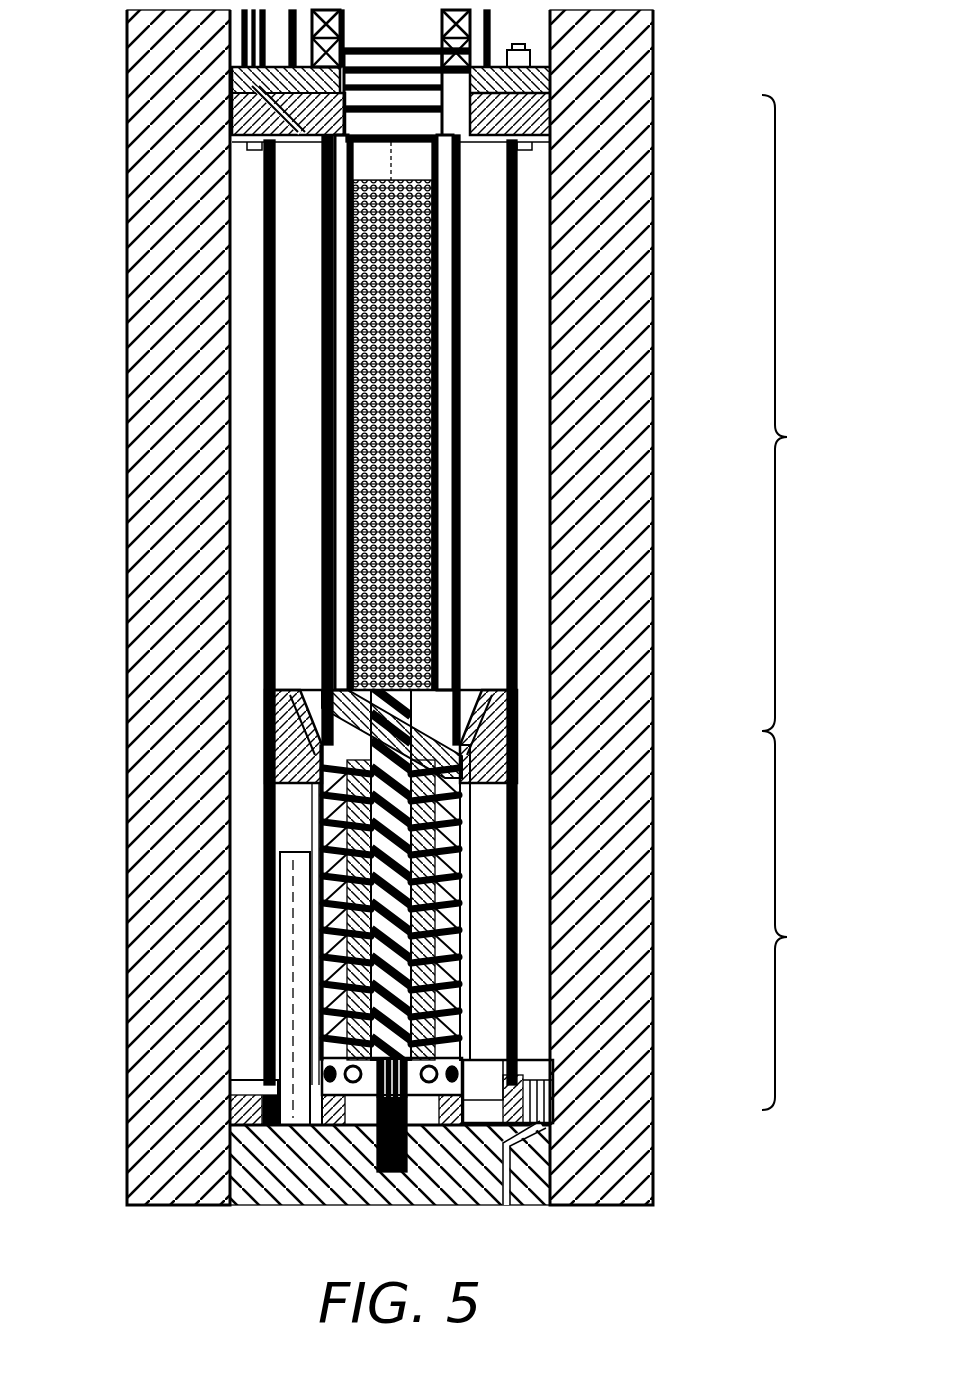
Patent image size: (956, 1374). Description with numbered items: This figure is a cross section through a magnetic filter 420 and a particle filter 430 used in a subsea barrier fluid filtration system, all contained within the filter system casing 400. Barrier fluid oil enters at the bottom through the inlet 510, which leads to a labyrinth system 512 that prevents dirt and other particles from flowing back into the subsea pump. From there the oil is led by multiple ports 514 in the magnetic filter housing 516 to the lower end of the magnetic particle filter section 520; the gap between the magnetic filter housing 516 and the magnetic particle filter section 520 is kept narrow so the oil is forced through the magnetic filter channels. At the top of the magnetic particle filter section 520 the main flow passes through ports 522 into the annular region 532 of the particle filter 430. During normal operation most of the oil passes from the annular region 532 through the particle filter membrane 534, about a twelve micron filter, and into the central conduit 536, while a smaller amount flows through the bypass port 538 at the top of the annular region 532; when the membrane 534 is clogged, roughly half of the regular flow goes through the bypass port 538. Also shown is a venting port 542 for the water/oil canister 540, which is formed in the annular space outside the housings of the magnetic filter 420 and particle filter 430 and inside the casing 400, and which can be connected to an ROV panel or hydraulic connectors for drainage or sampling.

The filter system casing 400 is at (195, 439).
The particle filter 430 is at (798, 413).
The magnetic filter 420 is at (798, 920).
The bypass port 538 is at (293, 143).
The central conduit 536 is at (403, 163).
The annular region 532 is at (485, 415).
The particle filter membrane 534 is at (322, 488).
The ports 522 is at (447, 728).
The labyrinth system 512 is at (282, 832).
The magnetic particle filter section 520 is at (453, 893).
The water/oil canister 540 is at (244, 948).
The magnetic filter housing 516 is at (468, 1008).
The ports 514 is at (455, 1065).
The inlet 510 is at (340, 1183).
The venting port 542 is at (506, 1206).